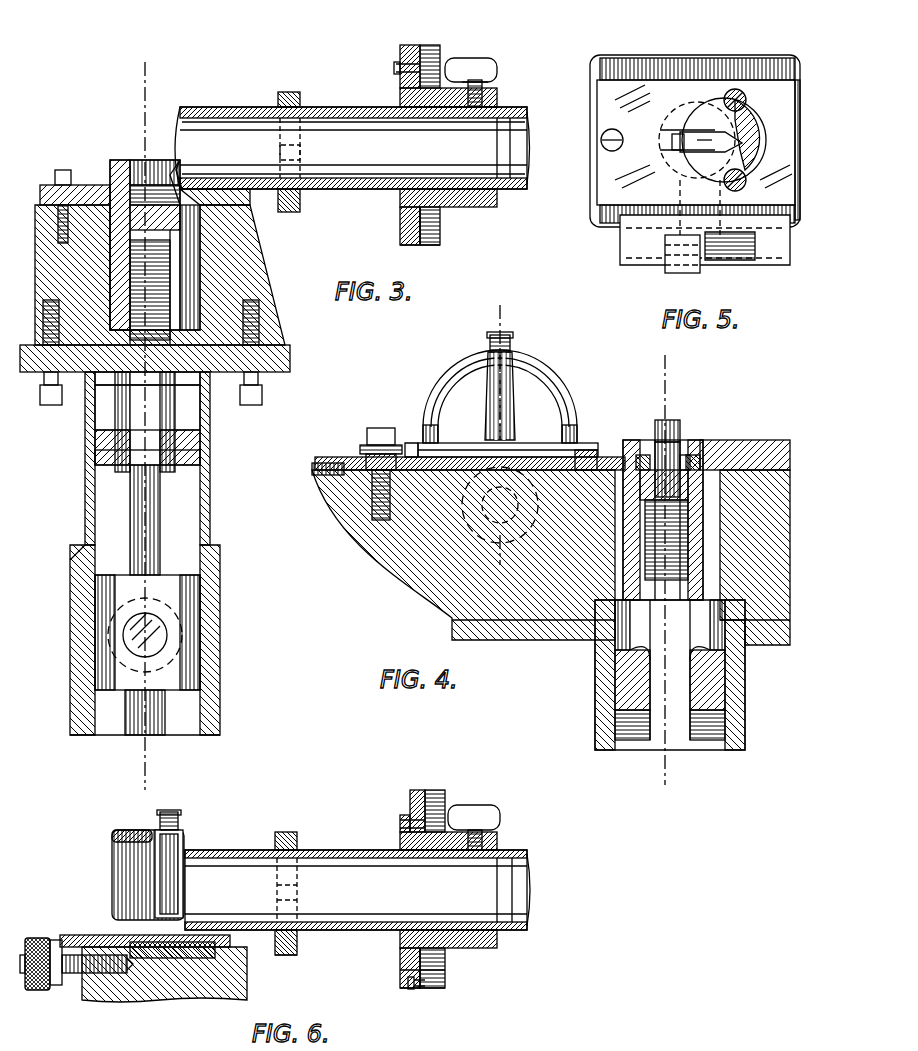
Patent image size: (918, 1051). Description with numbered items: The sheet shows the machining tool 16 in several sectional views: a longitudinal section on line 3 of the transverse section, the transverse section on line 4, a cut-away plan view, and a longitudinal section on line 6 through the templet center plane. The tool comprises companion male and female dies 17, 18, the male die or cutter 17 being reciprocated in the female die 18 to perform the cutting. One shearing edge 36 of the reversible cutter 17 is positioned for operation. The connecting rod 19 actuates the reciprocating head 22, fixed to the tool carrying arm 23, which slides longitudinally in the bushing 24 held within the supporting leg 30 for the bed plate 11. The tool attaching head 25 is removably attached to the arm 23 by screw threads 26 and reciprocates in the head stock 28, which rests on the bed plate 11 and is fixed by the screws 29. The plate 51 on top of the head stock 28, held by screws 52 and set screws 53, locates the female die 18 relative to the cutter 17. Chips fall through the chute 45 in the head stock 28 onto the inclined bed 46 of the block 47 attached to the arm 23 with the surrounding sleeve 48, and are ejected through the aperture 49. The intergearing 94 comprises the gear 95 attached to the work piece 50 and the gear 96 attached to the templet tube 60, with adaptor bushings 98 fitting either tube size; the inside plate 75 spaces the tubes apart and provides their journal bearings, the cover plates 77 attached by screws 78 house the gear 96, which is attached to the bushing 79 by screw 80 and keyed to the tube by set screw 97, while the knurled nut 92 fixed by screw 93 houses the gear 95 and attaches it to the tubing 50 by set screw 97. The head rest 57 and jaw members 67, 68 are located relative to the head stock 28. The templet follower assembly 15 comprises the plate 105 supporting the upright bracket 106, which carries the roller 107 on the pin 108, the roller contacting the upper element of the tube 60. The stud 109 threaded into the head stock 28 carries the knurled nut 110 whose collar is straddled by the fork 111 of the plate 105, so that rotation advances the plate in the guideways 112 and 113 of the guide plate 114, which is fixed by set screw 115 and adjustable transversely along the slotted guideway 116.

In FIG. 4, the section line 3— 3 is at (682, 372).
In FIG. 3, the section line 4— 4 is at (122, 68).
In FIG. 4, the section line 6— 6 is at (520, 325).
In FIG. 3, the bed plate 11 is at (276, 360).
In FIG. 4, the bed plate 11 is at (458, 632).
In FIG. 4, the latch assembly 15 is at (534, 352).
In FIG. 6, the latch assembly 15 is at (80, 835).
In FIG. 3, the machining tool 16 is at (108, 127).
In FIG. 4, the machining tool 16 is at (702, 422).
In FIG. 3, the male die (cutter) 17 is at (150, 172).
In FIG. 5, the male die (cutter) 17 is at (708, 142).
In FIG. 4, the male die (cutter) 17 is at (661, 418).
In FIG. 3, the female die 18 is at (228, 194).
In FIG. 5, the female die 18 is at (762, 148).
In FIG. 4, the female die 18 is at (645, 450).
In FIG. 3, the connecting rod 19 is at (160, 737).
In FIG. 3, the reciprocating head 22 is at (188, 598).
In FIG. 3, the tool carrying shank or arm 23 is at (165, 440).
In FIG. 4, the tool carrying shank or arm 23 is at (678, 665).
In FIG. 3, the bushing 24 is at (116, 507).
In FIG. 3, the tool attaching head 25 is at (112, 176).
In FIG. 5, the tool attaching head 25 is at (666, 148).
In FIG. 4, the tool attaching head 25 is at (698, 510).
In FIG. 3, the screw threads 26 is at (175, 292).
In FIG. 4, the screw threads 26 is at (700, 545).
In FIG. 3, the head stock 28 is at (248, 250).
In FIG. 5, the head stock 28 is at (604, 212).
In FIG. 6, the head stock 28 is at (248, 991).
In FIG. 3, the screws 29 is at (58, 412).
In FIG. 3, the supporting leg (reciprocating mechanism housing) 30 is at (221, 652).
In FIG. 5, the shearing edge 36 is at (707, 135).
In FIG. 4, the shearing edge 36 is at (684, 440).
In FIG. 3, the chute 45 is at (205, 234).
In FIG. 3, the inclined bed 46 is at (222, 386).
In FIG. 4, the inclined bed 46 is at (612, 670).
In FIG. 3, the block 47 is at (215, 432).
In FIG. 4, the block 47 is at (610, 700).
In FIG. 3, the sleeve 48 is at (208, 456).
In FIG. 4, the sleeve 48 is at (612, 722).
In FIG. 3, the aperture 49 is at (205, 402).
In FIG. 4, the aperture 49 is at (700, 682).
In FIG. 3, the work piece (tube) 50 is at (305, 191).
In FIG. 3, the plate 51 is at (48, 190).
In FIG. 5, the plate 51 is at (602, 128).
In FIG. 4, the plate 51 is at (728, 449).
In FIG. 3, the screws 52 is at (62, 172).
In FIG. 5, the screws 52 is at (601, 145).
In FIG. 5, the set screws 53 is at (740, 100).
In FIG. 3, the head rest 57 is at (298, 84).
In FIG. 6, the templet tube 60 is at (520, 874).
In FIG. 3, the jaw member 67 is at (289, 213).
In FIG. 6, the jaw member 67 is at (293, 952).
In FIG. 3, the jaw member 68 is at (278, 98).
In FIG. 6, the jaw member 68 is at (288, 835).
In FIG. 3, the inside plate 75 is at (426, 246).
In FIG. 6, the inside plate 75 is at (426, 996).
In FIG. 6, the cover plates 77 is at (408, 992).
In FIG. 6, the screws 78 is at (408, 983).
In FIG. 6, the bushing 79 is at (408, 816).
In FIG. 6, the screw 80 is at (400, 828).
In FIG. 3, the knurled nut 92 is at (404, 238).
In FIG. 3, the screw 93 is at (400, 70).
In FIG. 3, the intergearing 94 is at (460, 50).
In FIG. 6, the intergearing 94 is at (442, 797).
In FIG. 3, the gear 95 is at (441, 222).
In FIG. 6, the gear 96 is at (446, 970).
In FIG. 3, the set screw 97 is at (470, 64).
In FIG. 6, the set screw 97 is at (470, 810).
In FIG. 3, the adaptor bushings 98 is at (400, 96).
In FIG. 6, the adaptor bushings 98 is at (400, 846).
In FIG. 4, the plate (carriage plate) 105 is at (508, 455).
In FIG. 6, the plate (carriage plate) 105 is at (64, 940).
In FIG. 4, the upright bracket 106 is at (540, 386).
In FIG. 6, the upright bracket 106 is at (110, 856).
In FIG. 4, the roller 107 is at (509, 405).
In FIG. 6, the roller 107 is at (182, 843).
In FIG. 4, the pin 108 is at (500, 341).
In FIG. 6, the pin 108 is at (181, 817).
In FIG. 6, the stud 109 is at (70, 980).
In FIG. 6, the knurled nut 110 is at (37, 995).
In FIG. 6, the fork 111 is at (52, 940).
In FIG. 4, the guideway 112 is at (584, 455).
In FIG. 4, the guideway 113 is at (413, 443).
In FIG. 4, the guide plate 114 is at (346, 458).
In FIG. 6, the guide plate 114 is at (216, 950).
In FIG. 4, the set screw 115 is at (380, 430).
In FIG. 4, the slotted guideway 116 is at (345, 470).